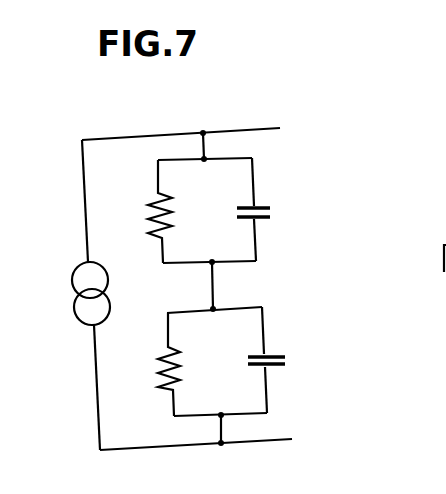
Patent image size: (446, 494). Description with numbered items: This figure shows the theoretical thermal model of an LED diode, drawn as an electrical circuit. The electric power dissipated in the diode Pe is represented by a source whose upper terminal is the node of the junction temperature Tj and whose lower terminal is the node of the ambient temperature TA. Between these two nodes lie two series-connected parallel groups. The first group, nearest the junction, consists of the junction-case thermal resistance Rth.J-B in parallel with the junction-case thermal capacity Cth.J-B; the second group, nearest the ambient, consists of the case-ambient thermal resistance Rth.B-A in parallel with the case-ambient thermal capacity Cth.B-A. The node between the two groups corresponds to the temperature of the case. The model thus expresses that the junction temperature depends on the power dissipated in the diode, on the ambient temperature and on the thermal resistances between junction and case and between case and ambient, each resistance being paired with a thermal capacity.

The electric power dissipated in the diode Pe is at (62, 259).
The junction temperature Tj is at (252, 109).
The ambient temperature TA is at (279, 458).
The junction-case thermal resistance Rth.J-B is at (153, 203).
The junction-case thermal capacity Cth.J-B is at (277, 199).
The case-ambient thermal resistance Rth.B-A is at (178, 378).
The case-ambient thermal capacity Cth.B-A is at (283, 350).